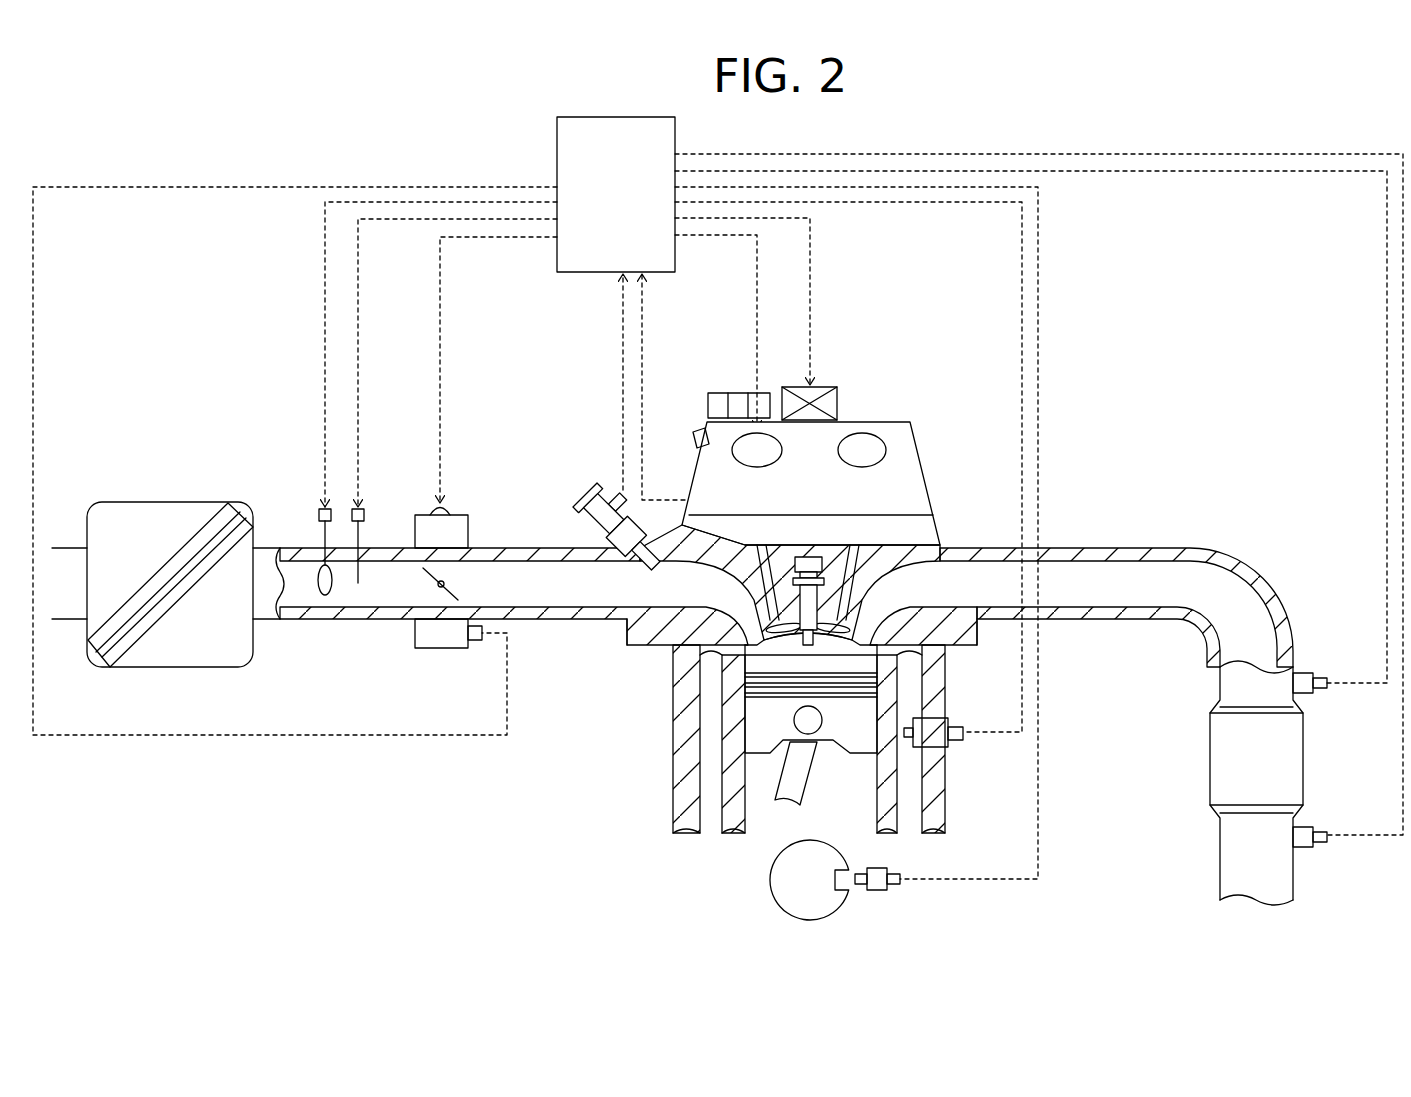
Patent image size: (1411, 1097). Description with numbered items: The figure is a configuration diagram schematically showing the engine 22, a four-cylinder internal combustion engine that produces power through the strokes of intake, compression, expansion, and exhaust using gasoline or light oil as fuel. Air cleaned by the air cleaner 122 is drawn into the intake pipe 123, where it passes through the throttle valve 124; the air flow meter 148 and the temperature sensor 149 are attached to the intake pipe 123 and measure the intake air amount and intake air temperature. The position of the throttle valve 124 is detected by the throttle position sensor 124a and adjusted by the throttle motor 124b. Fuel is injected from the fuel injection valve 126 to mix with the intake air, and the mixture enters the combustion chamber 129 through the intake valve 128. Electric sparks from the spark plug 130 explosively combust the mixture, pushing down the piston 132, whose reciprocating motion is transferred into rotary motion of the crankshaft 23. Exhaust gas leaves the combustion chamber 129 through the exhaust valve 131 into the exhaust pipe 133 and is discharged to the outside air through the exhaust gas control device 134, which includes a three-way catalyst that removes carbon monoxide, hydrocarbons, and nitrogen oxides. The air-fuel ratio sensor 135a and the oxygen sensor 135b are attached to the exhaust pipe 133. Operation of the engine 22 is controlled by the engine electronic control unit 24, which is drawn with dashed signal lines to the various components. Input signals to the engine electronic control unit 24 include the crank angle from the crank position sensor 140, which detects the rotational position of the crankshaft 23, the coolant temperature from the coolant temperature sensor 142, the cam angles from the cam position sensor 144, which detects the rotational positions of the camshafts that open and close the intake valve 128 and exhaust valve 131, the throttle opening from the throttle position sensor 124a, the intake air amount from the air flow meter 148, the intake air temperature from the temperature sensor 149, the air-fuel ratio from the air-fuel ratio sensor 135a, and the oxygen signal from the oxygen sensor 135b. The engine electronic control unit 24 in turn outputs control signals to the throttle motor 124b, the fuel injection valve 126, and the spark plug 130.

The engine 22 is at (906, 366).
The crankshaft 23 is at (770, 882).
The engine electronic control unit 24 is at (557, 152).
The air cleaner 122 is at (172, 500).
The intake pipe 123 is at (345, 622).
The throttle valve 124 is at (425, 575).
The throttle position sensor 124a is at (436, 650).
The throttle motor 124b is at (449, 505).
The fuel injection valve 126 is at (592, 490).
The intake valve 128 is at (762, 608).
The combustion chamber 129 is at (808, 640).
The spark plug 130 is at (812, 608).
The exhaust valve 131 is at (853, 618).
The piston 132 is at (765, 712).
The exhaust pipe 133 is at (968, 545).
The exhaust gas control device 134 is at (1208, 748).
The air-fuel ratio sensor 135a is at (1330, 652).
The oxygen sensor 135b is at (1345, 805).
The crank position sensor 140 is at (875, 892).
The coolant temperature sensor 142 is at (955, 750).
The cam position sensor 144 is at (700, 428).
The air flow meter 148 is at (321, 506).
The temperature sensor 149 is at (366, 506).